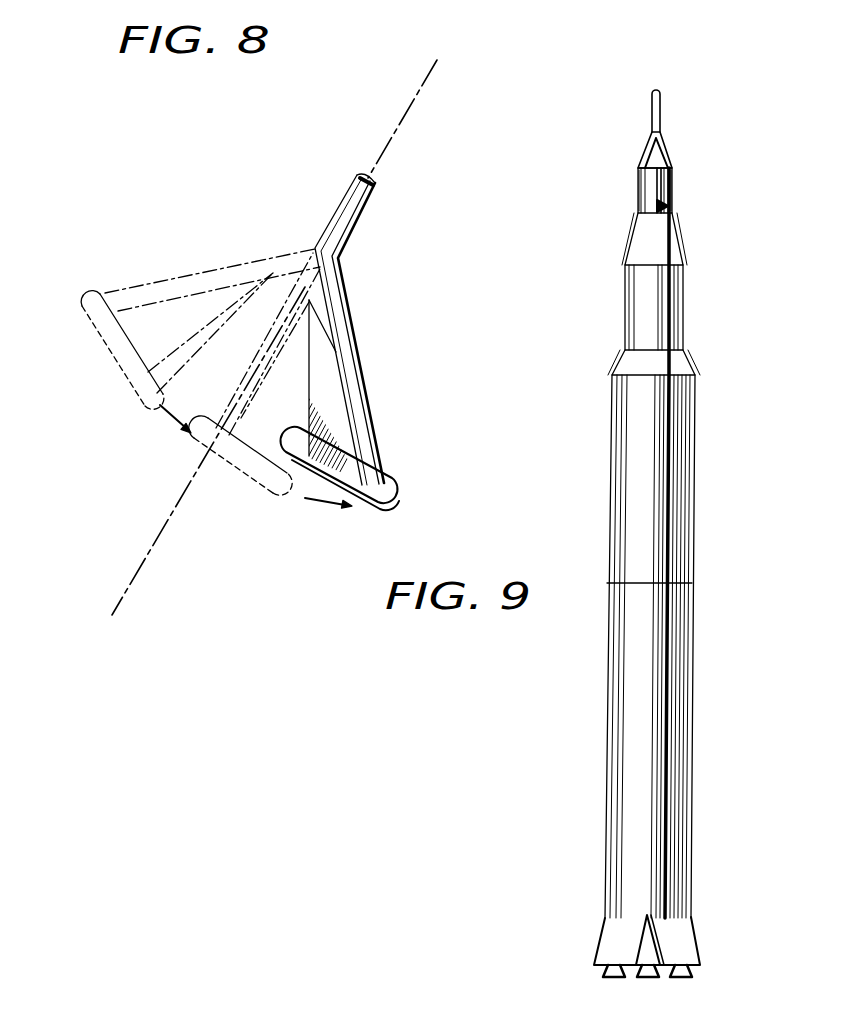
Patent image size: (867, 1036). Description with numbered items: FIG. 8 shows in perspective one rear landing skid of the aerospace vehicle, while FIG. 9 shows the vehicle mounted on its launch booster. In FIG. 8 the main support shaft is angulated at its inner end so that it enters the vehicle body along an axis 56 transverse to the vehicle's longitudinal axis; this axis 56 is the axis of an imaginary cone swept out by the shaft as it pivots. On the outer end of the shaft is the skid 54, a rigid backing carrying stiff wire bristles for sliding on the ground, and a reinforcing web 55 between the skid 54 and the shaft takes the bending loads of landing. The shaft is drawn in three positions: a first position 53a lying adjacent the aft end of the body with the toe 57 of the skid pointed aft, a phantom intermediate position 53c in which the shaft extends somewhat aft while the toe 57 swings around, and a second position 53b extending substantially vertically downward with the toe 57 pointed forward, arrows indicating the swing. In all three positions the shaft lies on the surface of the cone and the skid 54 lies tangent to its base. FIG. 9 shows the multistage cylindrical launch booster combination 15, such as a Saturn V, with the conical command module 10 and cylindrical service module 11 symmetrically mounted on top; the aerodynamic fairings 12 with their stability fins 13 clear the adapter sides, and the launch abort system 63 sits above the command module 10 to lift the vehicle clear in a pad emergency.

In FIG. 9, the command module 10 is at (648, 152).
In FIG. 9, the service module 11 is at (638, 195).
In FIG. 9, the aerodynamic fairings 12 is at (653, 180).
In FIG. 9, the fins 13 is at (668, 203).
In FIG. 9, the launch booster combination 15 is at (695, 413).
In FIG. 9, the launch abort system 63 is at (660, 113).
In FIG. 8, the first position 53a is at (186, 275).
In FIG. 8, the second position 53b is at (347, 344).
In FIG. 8, the intermediate position 53c is at (246, 393).
In FIG. 8, the skid 54 is at (102, 339).
In FIG. 8, the reinforcing web 55 is at (331, 387).
In FIG. 8, the axis 56 is at (392, 137).
In FIG. 8, the toe 57 is at (162, 404).